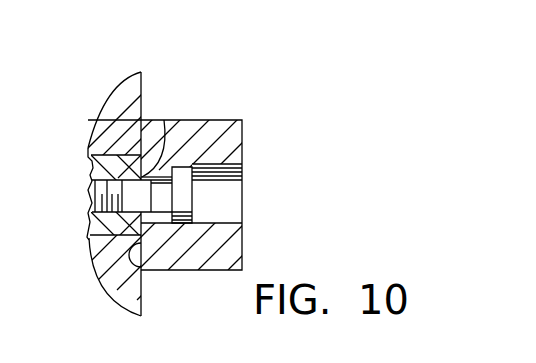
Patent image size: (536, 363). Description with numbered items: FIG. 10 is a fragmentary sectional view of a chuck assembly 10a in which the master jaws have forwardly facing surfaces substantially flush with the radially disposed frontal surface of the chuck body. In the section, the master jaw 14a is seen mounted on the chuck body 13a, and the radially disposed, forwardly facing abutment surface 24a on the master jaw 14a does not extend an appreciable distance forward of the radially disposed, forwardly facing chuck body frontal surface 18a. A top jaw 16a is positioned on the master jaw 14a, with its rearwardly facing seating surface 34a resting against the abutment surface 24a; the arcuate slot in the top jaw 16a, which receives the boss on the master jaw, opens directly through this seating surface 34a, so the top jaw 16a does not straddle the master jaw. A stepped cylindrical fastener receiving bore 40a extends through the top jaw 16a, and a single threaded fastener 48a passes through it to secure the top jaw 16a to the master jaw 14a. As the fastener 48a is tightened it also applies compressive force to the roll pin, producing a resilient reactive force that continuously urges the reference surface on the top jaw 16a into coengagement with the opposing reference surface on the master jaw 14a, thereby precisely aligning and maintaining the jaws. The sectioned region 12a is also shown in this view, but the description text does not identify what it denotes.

The chuck assembly 10a is at (81, 233).
The support member 12a is at (254, 130).
The chuck body 13a is at (92, 120).
The master jaw 14a is at (113, 86).
The top jaw 16a is at (208, 104).
The chuck body frontal surface 18a is at (143, 290).
The abutment surface 24a is at (164, 120).
The seating surface 34a is at (142, 272).
The fastener receiving bore 40a is at (225, 223).
The fastener 48a is at (192, 200).